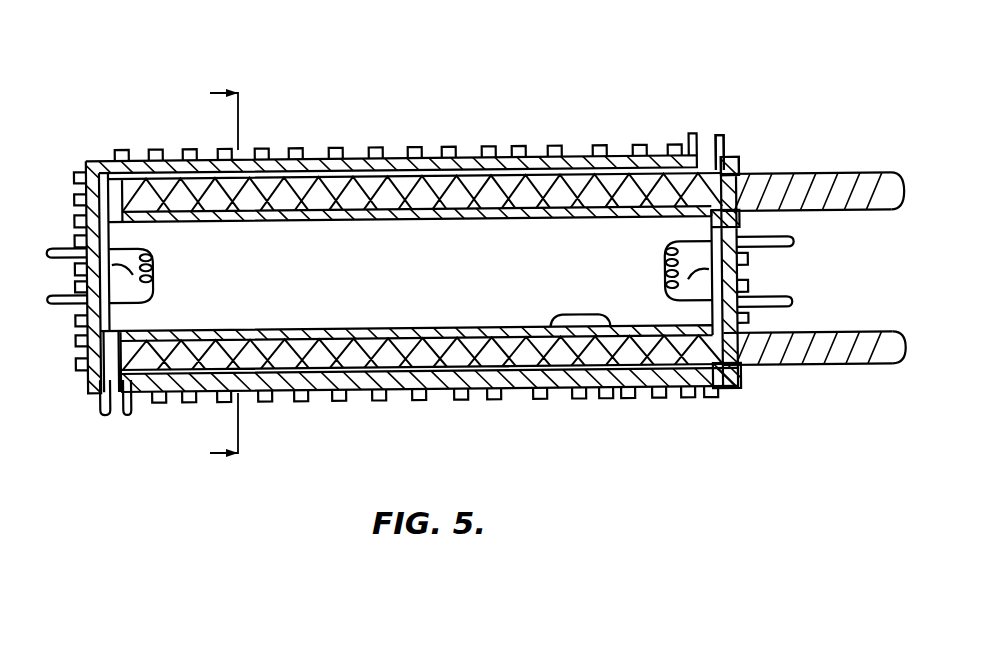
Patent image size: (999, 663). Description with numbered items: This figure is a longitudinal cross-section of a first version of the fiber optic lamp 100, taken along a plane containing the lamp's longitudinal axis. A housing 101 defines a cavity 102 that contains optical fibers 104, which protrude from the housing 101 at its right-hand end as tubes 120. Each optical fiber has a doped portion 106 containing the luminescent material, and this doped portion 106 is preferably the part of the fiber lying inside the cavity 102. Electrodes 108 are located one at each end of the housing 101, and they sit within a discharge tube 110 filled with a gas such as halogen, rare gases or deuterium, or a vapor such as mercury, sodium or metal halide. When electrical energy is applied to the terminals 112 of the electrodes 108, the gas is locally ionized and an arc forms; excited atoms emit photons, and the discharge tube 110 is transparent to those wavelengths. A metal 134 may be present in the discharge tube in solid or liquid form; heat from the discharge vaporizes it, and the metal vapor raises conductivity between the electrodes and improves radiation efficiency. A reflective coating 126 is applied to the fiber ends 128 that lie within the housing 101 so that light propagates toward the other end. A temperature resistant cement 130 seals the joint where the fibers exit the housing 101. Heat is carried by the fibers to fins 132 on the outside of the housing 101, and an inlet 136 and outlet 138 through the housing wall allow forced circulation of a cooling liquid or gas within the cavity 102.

The heater assembly 100 is at (504, 62).
The housing 101 is at (533, 162).
The cavity 102 is at (110, 190).
The optical fibers 104 is at (838, 170).
The doped portion 106 is at (432, 190).
The electrodes 108 is at (82, 326).
The discharge tube 110 is at (352, 328).
The terminals 112 is at (49, 298).
The tube end 120 is at (906, 186).
The reflective coating 126 is at (132, 392).
The ends of fibers 128 is at (97, 378).
The temperature resistant cement 130 is at (749, 176).
The fins 132 is at (667, 150).
The metal 134 is at (577, 315).
The inlet 136 is at (704, 136).
The outlet 138 is at (118, 422).